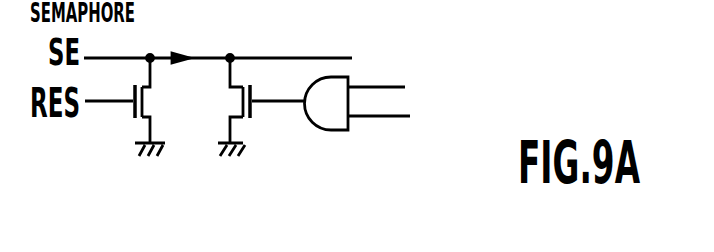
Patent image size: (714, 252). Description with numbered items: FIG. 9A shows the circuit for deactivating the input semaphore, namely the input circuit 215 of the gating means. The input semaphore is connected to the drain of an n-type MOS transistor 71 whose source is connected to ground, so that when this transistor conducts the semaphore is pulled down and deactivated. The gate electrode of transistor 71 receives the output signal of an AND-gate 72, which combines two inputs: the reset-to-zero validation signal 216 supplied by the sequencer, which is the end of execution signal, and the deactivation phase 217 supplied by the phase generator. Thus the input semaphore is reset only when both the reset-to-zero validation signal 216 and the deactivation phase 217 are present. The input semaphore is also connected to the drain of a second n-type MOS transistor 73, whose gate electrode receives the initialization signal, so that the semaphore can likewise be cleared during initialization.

The n-type MOS transistor 71 is at (264, 88).
The AND-gate 72 is at (333, 120).
The n-type MOS transistor 73 is at (129, 124).
The input circuit 215 is at (236, 174).
The reset-to-zero validation signal 216 is at (385, 82).
The input semaphore deactivation phase 217 is at (378, 117).